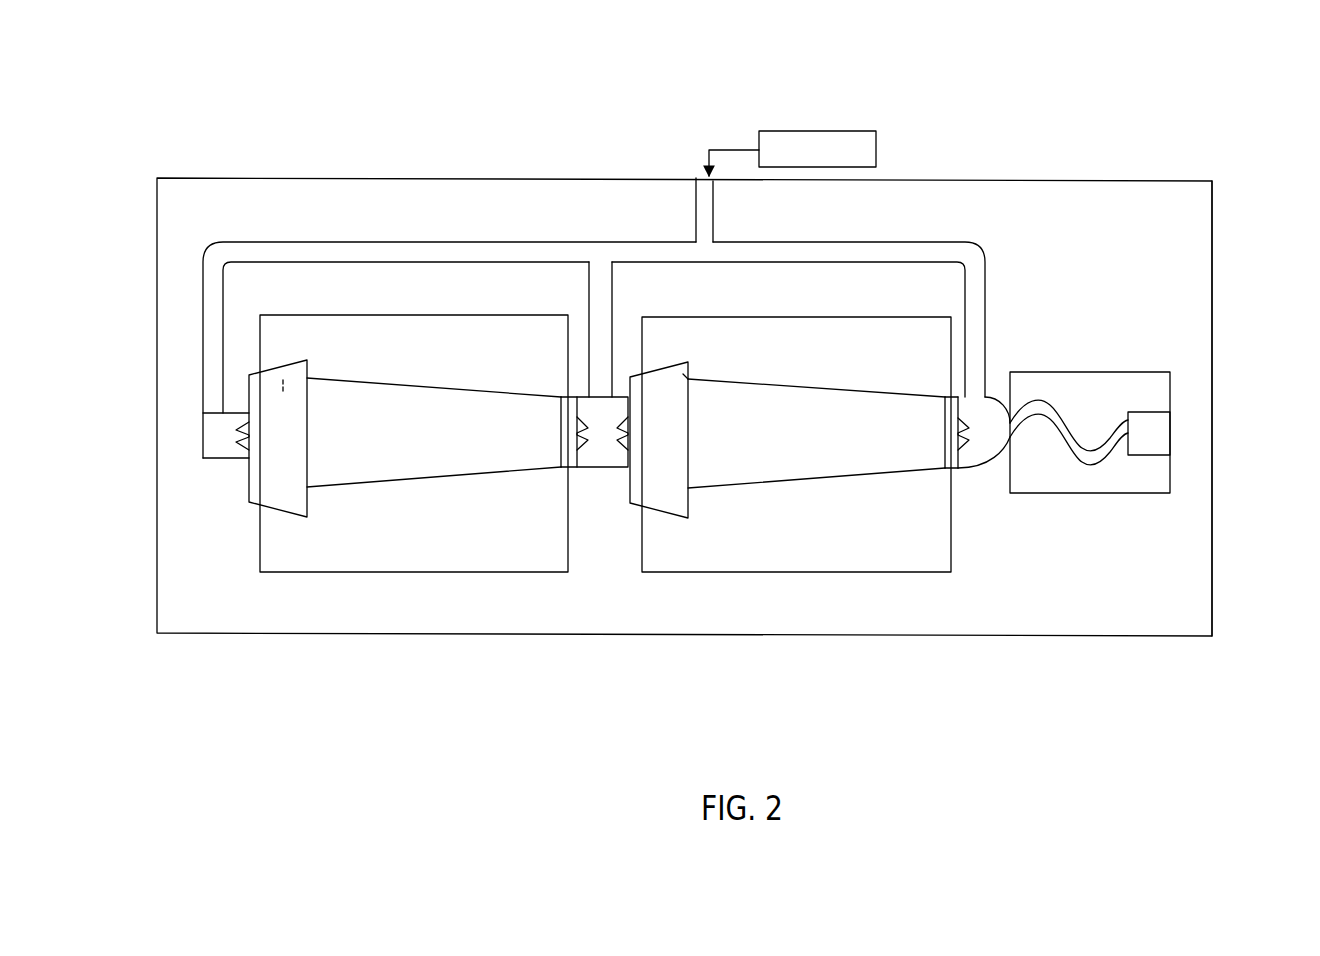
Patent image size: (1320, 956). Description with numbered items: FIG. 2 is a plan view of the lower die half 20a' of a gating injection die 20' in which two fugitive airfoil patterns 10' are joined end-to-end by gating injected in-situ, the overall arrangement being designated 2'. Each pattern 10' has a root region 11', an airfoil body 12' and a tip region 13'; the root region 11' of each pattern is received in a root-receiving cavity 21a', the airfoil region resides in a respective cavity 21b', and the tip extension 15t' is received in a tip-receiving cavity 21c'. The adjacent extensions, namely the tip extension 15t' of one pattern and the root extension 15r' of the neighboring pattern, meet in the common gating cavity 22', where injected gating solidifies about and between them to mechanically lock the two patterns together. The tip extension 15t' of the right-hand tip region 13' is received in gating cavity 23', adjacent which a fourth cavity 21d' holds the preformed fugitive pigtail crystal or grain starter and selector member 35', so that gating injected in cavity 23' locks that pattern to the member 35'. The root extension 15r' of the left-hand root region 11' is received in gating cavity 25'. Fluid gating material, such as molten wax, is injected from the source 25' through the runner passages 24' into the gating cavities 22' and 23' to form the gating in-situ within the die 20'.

The laser cooling system 2' is at (165, 412).
The fugitive pattern 10' is at (637, 443).
The root region 11' is at (517, 358).
The nozzle body 12' is at (434, 410).
The tip region 13' is at (726, 401).
The root extension 15r' is at (385, 514).
The tip extension 15t' is at (769, 514).
The gating die 20' is at (684, 373).
The lower die half 20a' is at (1252, 408).
The root-receiving cavity 21a' is at (426, 464).
The airfoil cavity 21b' is at (605, 502).
The tip-receiving cavity 21c' is at (777, 409).
The fourth cavity 21d' is at (1149, 449).
The gating cavity 22' is at (658, 300).
The gating cavity 23' is at (1007, 472).
The runner passages 24' is at (599, 282).
The source 25' is at (792, 132).
The pigtail crystal or grain starter and selector member 35' is at (1130, 439).